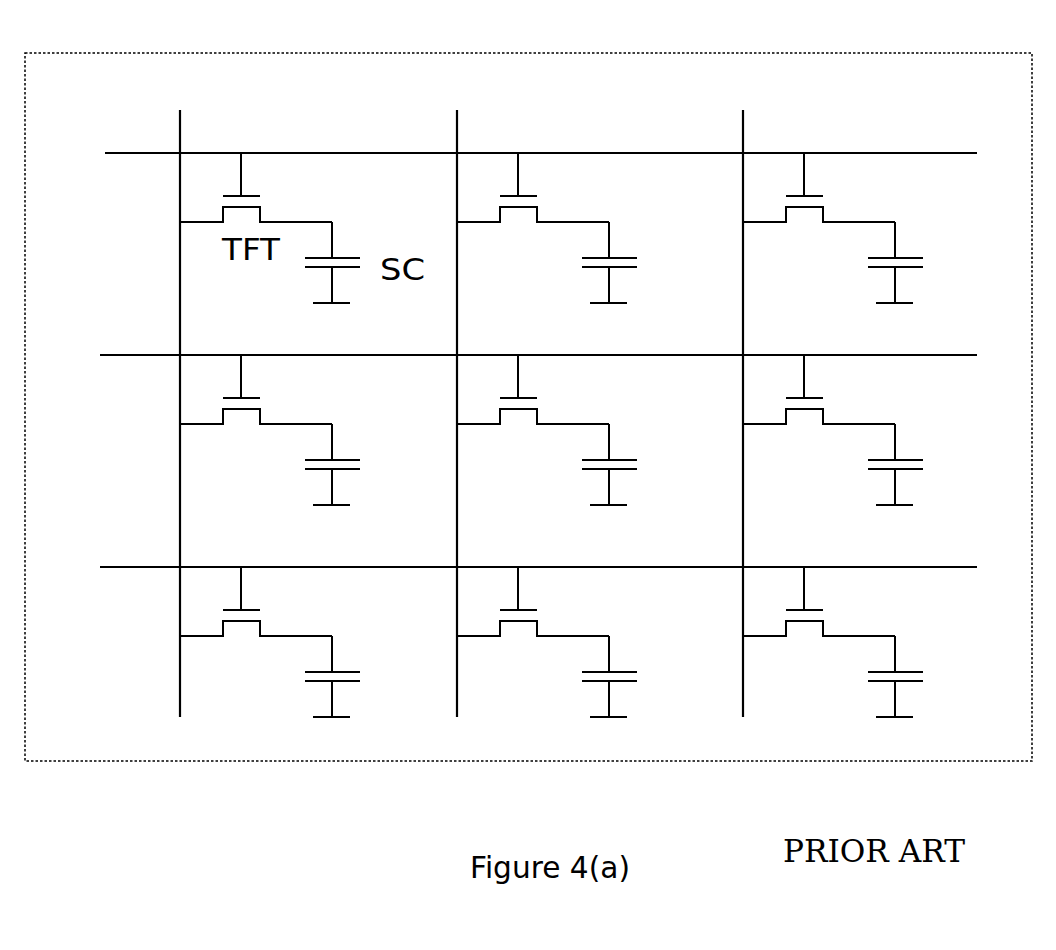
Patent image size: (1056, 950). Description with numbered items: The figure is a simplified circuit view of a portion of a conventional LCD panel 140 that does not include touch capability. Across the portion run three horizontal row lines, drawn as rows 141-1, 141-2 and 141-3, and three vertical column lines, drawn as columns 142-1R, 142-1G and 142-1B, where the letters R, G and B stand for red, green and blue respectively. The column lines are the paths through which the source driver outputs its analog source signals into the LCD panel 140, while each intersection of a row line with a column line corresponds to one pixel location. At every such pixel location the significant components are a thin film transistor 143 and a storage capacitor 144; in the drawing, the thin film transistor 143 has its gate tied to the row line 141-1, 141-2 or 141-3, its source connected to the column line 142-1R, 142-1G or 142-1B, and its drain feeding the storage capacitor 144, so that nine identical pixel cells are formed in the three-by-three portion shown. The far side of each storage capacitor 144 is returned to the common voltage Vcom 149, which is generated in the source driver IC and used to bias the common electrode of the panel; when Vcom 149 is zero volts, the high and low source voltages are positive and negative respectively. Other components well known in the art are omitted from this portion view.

The LCD panel 140 is at (455, 47).
The row line 141-1 is at (161, 156).
The row line 141-2 is at (161, 358).
The row line 141-3 is at (161, 570).
The column line 142-1R is at (228, 103).
The column line 142-1G is at (505, 103).
The column line 142-1B is at (791, 103).
The thin film transistor 143 is at (793, 436).
The storage capacitor 144 is at (934, 460).
The Vcom 149 is at (430, 345).